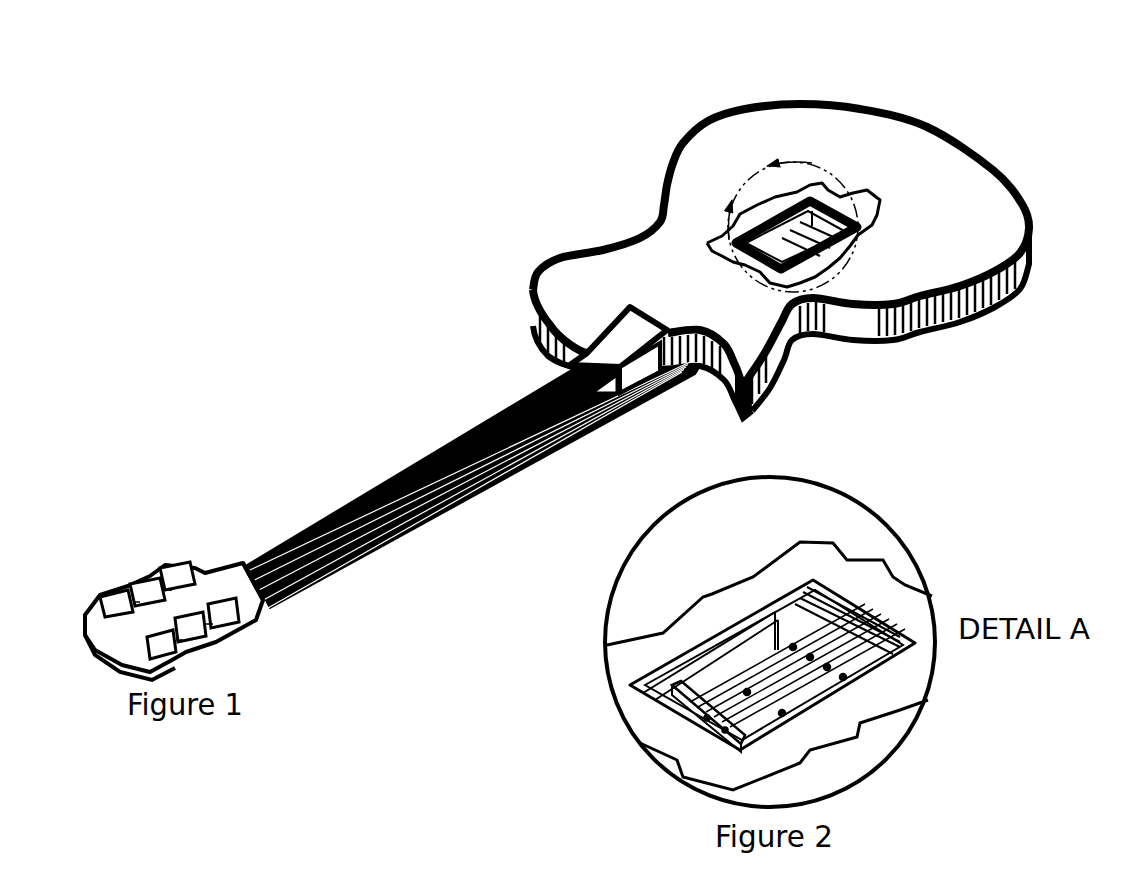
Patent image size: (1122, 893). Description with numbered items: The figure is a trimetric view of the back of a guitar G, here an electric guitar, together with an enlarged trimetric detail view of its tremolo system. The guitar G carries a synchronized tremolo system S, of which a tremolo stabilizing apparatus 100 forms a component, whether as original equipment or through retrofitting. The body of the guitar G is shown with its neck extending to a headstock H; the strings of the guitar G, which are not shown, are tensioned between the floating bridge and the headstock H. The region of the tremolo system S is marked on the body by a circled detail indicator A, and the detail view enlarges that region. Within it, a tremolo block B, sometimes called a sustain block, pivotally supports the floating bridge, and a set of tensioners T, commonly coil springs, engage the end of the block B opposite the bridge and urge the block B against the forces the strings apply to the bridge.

In FIG. 1, the guitar G is at (590, 375).
In FIG. 1, the headstock H is at (253, 598).
In FIG. 1, the synchronized tremolo system S is at (833, 212).
In FIG. 1, the detail A region A is at (793, 227).
In FIG. 2, the tremolo stabilizing apparatus 100 is at (811, 585).
In FIG. 2, the set of tensioners T is at (843, 677).
In FIG. 2, the tremolo block B is at (832, 646).